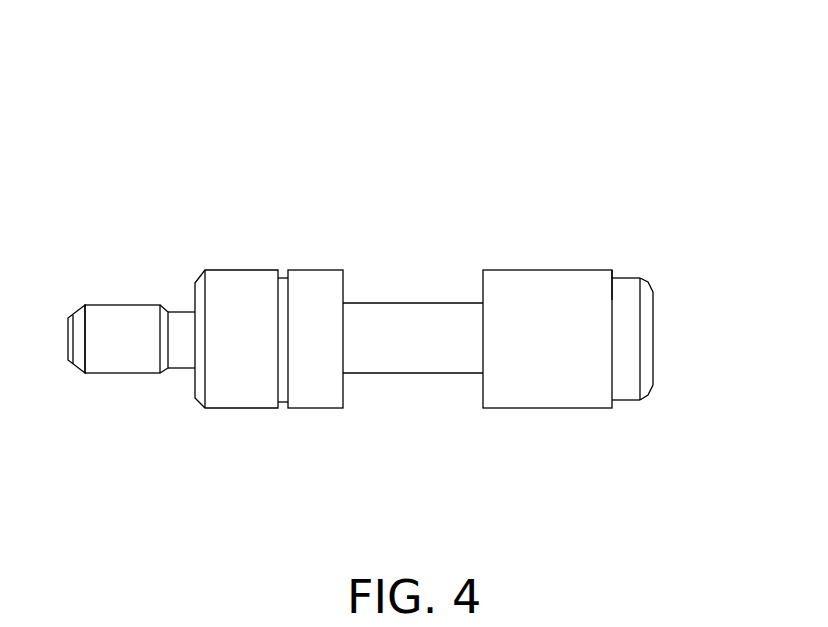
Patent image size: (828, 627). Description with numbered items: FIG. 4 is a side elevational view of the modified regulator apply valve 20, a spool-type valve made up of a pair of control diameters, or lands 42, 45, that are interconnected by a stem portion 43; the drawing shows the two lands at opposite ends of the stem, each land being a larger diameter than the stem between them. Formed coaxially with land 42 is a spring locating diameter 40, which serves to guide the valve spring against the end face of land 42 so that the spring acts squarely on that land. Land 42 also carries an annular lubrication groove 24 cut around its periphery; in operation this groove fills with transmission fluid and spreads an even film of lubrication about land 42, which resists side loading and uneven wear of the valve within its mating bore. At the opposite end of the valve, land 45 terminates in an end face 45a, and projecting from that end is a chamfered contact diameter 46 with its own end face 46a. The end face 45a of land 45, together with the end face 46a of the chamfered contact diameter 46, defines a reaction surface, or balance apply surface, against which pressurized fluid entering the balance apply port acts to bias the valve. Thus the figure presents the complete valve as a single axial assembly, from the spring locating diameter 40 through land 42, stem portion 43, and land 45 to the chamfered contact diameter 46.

The regulator apply valve 20 is at (440, 170).
The lubrication groove 24 is at (283, 403).
The spring locating diameter 40 is at (148, 358).
The land 42 is at (268, 357).
The stem portion 43 is at (410, 360).
The land 45 is at (585, 357).
The end face 45a is at (613, 272).
The chamfered contact diameter 46 is at (633, 333).
The end face 46a is at (655, 362).